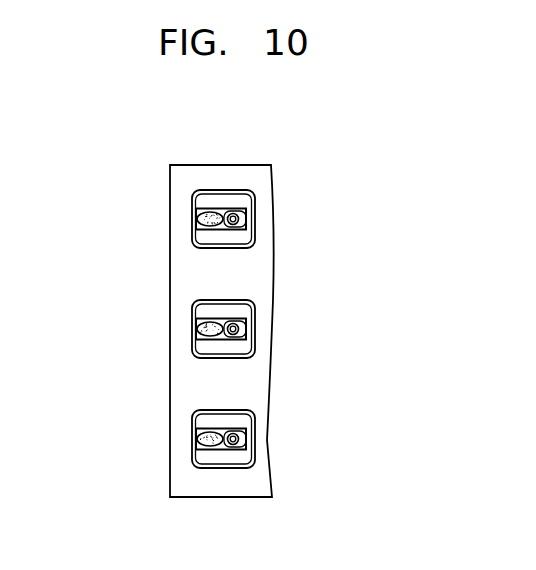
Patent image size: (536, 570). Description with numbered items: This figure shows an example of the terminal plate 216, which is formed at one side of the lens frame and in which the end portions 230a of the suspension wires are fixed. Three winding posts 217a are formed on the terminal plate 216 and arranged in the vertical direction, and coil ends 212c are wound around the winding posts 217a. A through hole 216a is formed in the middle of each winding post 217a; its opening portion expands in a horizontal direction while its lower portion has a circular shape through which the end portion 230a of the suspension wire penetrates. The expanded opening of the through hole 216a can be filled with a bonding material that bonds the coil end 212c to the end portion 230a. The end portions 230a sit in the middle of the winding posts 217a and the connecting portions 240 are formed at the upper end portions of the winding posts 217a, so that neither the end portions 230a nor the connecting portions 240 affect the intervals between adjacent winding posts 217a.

The terminal plate 216 is at (222, 172).
The through hole 216a is at (239, 214).
The coil end 212c is at (198, 219).
The winding post 217a is at (203, 237).
The connecting portion 240 is at (207, 213).
The end portion of suspension wire 230a is at (239, 226).